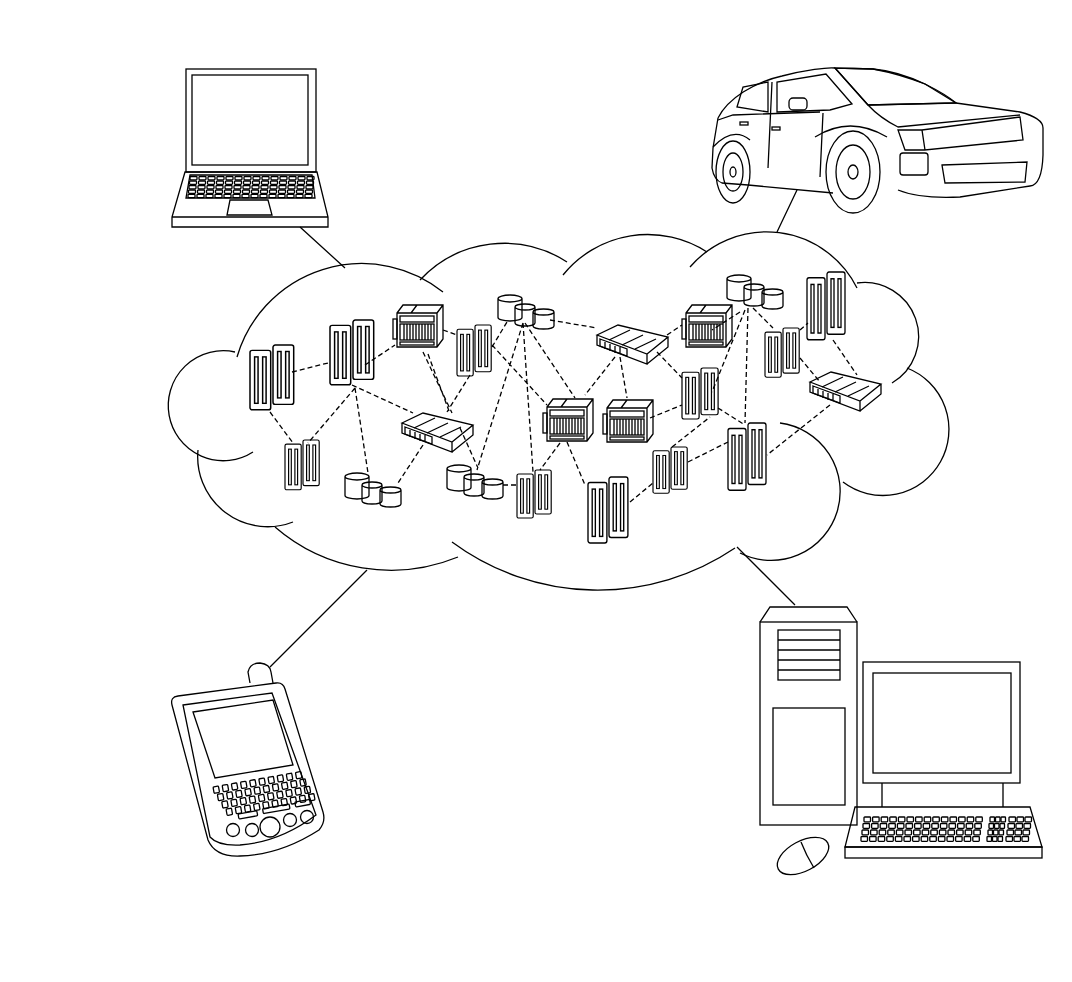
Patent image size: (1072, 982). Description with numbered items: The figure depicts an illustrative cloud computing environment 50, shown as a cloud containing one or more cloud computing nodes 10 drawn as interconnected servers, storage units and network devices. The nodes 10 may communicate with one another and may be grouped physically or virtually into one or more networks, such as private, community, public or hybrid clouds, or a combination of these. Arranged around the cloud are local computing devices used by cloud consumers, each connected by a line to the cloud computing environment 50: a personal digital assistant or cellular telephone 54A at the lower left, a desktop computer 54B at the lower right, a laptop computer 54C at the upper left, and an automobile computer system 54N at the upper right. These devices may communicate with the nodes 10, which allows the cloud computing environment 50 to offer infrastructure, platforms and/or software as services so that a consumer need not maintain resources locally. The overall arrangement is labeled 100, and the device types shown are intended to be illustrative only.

The system 100 is at (128, 80).
The laptop computer 54C is at (315, 128).
The automobile computer system 54N is at (715, 140).
The cloud computing environment 50 is at (940, 388).
The cloud computing nodes 10 is at (885, 417).
The personal digital assistant (PDA) or cellular telephone 54A is at (307, 750).
The desktop computer 54B is at (940, 662).